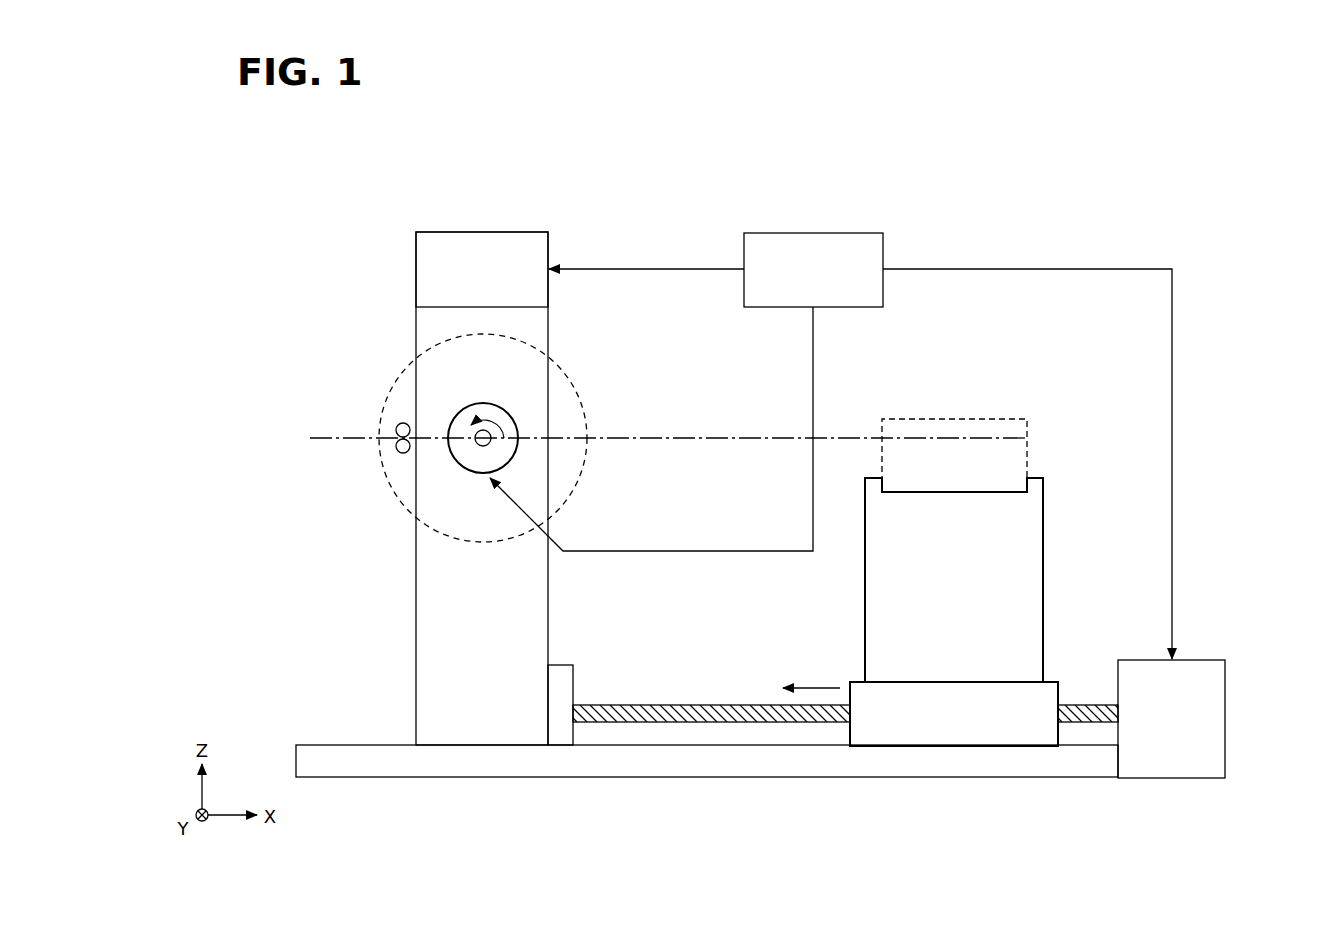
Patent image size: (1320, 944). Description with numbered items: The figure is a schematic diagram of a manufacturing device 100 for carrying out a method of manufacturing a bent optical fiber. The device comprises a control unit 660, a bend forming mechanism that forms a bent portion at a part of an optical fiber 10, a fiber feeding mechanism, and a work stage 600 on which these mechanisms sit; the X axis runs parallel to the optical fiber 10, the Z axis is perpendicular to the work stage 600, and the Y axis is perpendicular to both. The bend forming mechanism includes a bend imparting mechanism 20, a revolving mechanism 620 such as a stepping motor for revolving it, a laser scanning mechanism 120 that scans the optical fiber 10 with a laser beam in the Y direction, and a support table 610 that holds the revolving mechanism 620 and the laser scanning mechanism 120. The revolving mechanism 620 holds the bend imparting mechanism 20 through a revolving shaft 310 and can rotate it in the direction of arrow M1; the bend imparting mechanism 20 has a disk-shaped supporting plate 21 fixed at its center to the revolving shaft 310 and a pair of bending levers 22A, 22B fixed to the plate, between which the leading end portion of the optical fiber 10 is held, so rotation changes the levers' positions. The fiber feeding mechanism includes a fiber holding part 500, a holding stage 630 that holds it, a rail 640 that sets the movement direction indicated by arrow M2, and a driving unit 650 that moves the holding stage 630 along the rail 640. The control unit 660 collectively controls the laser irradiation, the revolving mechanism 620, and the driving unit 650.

The manufacturing device 100 is at (1068, 236).
The optical fiber 10 is at (768, 437).
The bend imparting mechanism 20 is at (310, 363).
The supporting plate 21 is at (392, 383).
The bending lever 22A is at (396, 430).
The bending lever 22B is at (396, 447).
The laser scanning mechanism 120 is at (515, 231).
The revolving shaft 310 is at (480, 447).
The fiber holding part 500 is at (998, 418).
The work stage 600 is at (788, 770).
The support table 610 is at (425, 680).
The revolving mechanism 620 is at (515, 456).
The holding stage 630 is at (1032, 585).
The rail 640 is at (733, 703).
The driving unit 650 is at (1170, 770).
The control unit 660 is at (855, 232).
The rotation direction arrow M1 is at (482, 419).
The movement direction arrow M2 is at (815, 684).